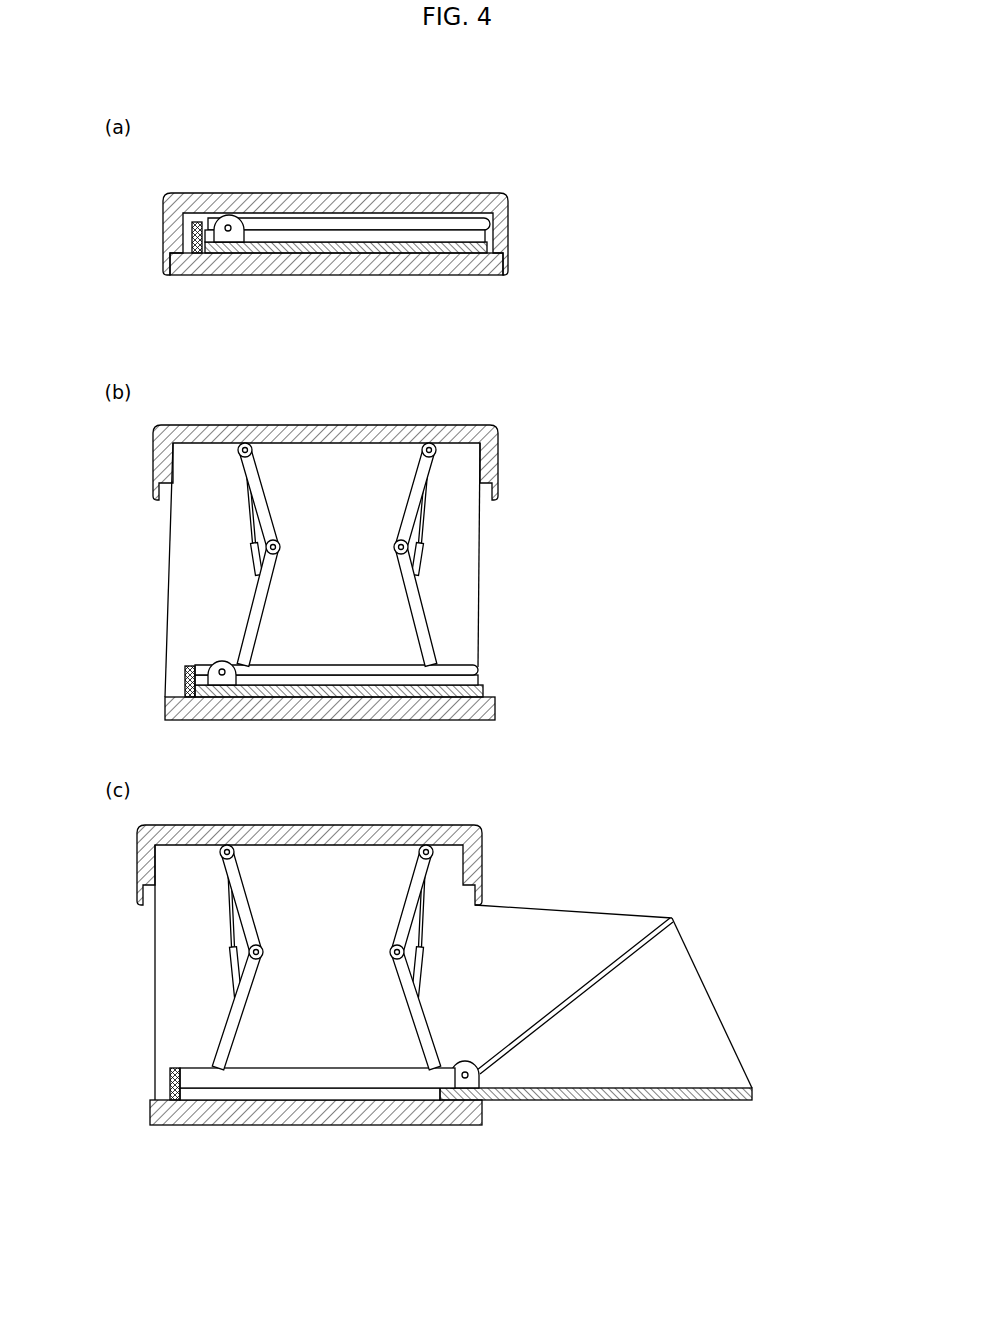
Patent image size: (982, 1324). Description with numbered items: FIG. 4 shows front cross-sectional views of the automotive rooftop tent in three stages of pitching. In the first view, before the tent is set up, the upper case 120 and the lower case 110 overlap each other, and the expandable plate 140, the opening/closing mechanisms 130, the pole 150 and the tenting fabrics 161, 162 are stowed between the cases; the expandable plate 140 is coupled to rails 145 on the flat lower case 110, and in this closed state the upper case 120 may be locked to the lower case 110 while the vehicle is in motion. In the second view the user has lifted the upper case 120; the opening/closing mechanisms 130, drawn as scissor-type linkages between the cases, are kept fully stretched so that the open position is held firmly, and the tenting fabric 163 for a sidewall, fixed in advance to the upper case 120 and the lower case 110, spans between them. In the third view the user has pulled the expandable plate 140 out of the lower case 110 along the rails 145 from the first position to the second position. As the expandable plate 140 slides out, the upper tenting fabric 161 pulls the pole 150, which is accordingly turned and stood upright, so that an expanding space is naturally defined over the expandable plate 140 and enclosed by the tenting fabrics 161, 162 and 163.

The lower case 110 is at (478, 267).
The upper case 120 is at (493, 218).
The opening/closing mechanisms 130 is at (287, 515).
The expandable plate 140 is at (250, 248).
The rails 145 is at (290, 233).
The pole 150 is at (265, 225).
The upper tenting fabric 161 is at (403, 213).
The tenting fabric 162 is at (383, 240).
The tenting fabric for a sidewall 163 is at (165, 565).